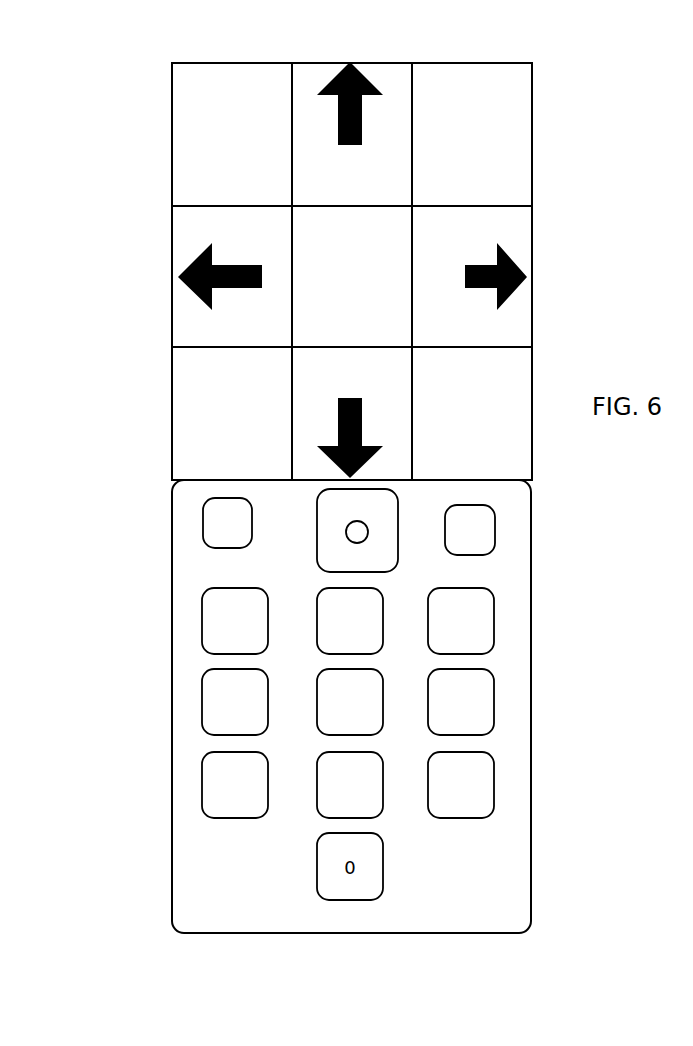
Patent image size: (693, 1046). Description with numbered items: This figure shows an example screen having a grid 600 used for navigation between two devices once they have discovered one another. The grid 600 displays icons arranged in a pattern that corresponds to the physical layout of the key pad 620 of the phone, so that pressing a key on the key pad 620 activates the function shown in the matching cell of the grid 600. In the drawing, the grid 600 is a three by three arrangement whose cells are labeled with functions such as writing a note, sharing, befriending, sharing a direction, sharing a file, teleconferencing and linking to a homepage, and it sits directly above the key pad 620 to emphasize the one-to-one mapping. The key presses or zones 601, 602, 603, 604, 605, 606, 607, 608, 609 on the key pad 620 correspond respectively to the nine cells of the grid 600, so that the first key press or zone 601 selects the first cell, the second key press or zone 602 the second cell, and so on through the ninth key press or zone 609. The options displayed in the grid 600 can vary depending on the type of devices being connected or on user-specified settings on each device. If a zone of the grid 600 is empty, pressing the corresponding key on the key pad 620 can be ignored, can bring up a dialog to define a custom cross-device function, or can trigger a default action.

The grid 600 is at (540, 172).
The key press or zone 601 is at (202, 620).
The key press or zone 602 is at (383, 592).
The key press or zone 603 is at (494, 620).
The key press or zone 604 is at (202, 703).
The key press or zone 605 is at (383, 702).
The key press or zone 606 is at (494, 702).
The key press or zone 607 is at (202, 783).
The key press or zone 608 is at (383, 785).
The key press or zone 609 is at (494, 785).
The key pad 620 is at (172, 862).